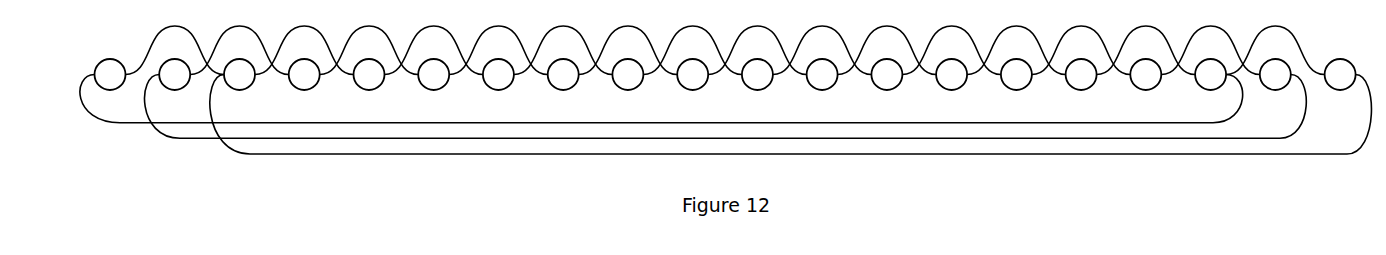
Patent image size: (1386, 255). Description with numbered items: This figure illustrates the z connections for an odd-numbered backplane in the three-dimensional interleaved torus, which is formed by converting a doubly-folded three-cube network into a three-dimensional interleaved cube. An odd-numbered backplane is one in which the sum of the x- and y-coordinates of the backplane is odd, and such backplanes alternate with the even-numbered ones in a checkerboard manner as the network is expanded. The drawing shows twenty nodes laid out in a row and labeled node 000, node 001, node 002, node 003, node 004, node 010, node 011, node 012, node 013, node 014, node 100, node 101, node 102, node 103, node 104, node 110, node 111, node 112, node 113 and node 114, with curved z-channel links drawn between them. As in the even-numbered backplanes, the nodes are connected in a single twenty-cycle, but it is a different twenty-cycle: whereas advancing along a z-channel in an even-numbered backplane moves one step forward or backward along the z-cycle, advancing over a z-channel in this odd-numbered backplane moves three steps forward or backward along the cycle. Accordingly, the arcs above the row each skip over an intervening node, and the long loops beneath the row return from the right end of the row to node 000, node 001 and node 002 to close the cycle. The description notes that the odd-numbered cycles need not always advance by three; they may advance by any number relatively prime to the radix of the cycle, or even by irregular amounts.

The node 000 is at (110, 74).
The node 001 is at (174, 74).
The node 002 is at (239, 74).
The node 003 is at (304, 74).
The node 004 is at (369, 74).
The node 010 is at (433, 74).
The node 011 is at (498, 74).
The node 012 is at (563, 74).
The node 013 is at (627, 74).
The node 014 is at (692, 74).
The node 100 is at (757, 74).
The node 101 is at (822, 74).
The node 102 is at (886, 74).
The node 103 is at (951, 74).
The node 104 is at (1016, 74).
The node 110 is at (1081, 74).
The node 111 is at (1145, 74).
The node 112 is at (1210, 74).
The node 113 is at (1275, 74).
The node 114 is at (1340, 74).